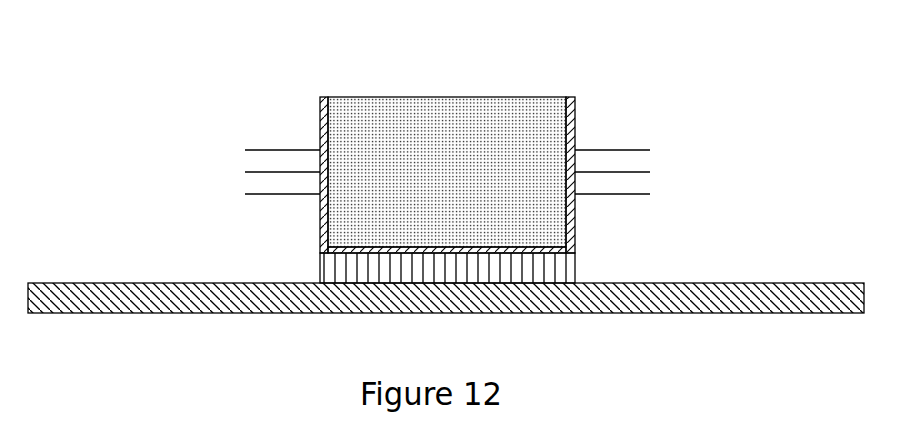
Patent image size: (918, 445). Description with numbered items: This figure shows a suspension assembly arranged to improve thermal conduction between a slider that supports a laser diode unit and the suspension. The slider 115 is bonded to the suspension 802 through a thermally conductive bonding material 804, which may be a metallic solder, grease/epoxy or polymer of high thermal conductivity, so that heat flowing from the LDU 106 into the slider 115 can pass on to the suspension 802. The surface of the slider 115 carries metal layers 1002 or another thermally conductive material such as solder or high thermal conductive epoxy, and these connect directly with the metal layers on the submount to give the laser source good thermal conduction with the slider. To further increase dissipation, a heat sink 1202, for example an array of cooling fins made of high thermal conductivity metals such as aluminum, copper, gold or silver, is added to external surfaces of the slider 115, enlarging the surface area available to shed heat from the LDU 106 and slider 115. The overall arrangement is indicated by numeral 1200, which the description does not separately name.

The LDU 106 is at (318, 60).
The slider 115 is at (433, 97).
The suspension 802 is at (783, 283).
The thermally conductive bonding material 804 is at (321, 270).
The metal layer(s) 1002 is at (320, 110).
The assembly 1200 is at (528, 70).
The heat sink 1202 is at (630, 150).